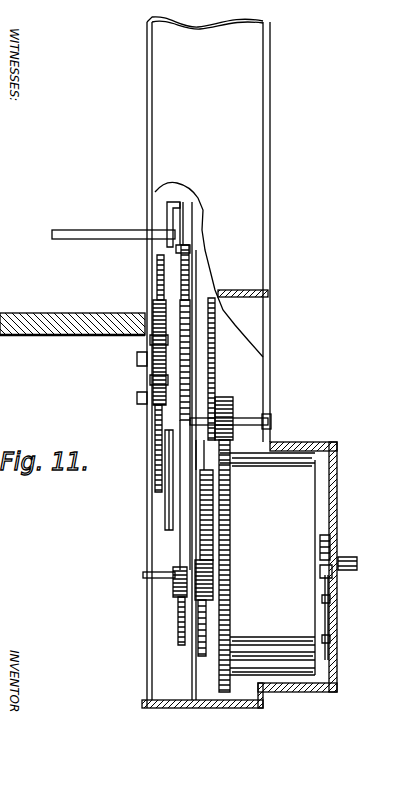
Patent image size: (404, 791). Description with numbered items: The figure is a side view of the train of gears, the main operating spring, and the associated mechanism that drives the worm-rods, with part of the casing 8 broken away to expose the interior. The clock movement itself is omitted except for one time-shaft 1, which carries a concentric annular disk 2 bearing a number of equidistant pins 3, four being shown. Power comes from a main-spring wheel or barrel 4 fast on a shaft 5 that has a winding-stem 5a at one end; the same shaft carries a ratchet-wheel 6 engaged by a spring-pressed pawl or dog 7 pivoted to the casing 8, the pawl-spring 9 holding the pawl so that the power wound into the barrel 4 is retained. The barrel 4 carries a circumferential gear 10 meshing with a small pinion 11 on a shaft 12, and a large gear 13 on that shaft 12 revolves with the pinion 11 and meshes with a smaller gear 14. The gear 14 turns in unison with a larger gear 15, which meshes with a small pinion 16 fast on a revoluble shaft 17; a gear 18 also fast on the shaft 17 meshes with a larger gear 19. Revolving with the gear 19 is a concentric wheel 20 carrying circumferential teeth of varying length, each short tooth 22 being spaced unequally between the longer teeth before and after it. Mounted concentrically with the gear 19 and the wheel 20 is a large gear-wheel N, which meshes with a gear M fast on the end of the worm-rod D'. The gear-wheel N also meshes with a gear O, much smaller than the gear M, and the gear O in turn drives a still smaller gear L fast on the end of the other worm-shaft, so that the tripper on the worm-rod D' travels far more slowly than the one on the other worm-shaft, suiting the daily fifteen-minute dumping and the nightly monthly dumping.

The time-shaft 1 is at (50, 234).
The annular disk 2 is at (180, 206).
The pins 3 is at (172, 204).
The main-spring wheel or barrel 4 is at (272, 622).
The shaft 5 is at (160, 565).
The winding-stem 5a is at (350, 560).
The ratchet-wheel 6 is at (330, 540).
The spring-pressed pawl or dog 7 is at (338, 583).
The casing 8 is at (337, 465).
The pawl-spring 9 is at (338, 632).
The gear 10 is at (232, 488).
The small pinion 11 is at (225, 397).
The shaft 12 is at (243, 418).
The large gear 13 is at (215, 338).
The smaller gear 14 is at (215, 555).
The larger gear 15 is at (215, 510).
The small pinion 16 is at (195, 600).
The revoluble shaft 17 is at (175, 588).
The gear 18 is at (178, 645).
The larger gear 19 is at (188, 267).
The wheel 20 is at (172, 285).
The short tooth 22 is at (160, 256).
The worm-rod D' is at (72, 310).
The gear L is at (152, 315).
The gear M is at (158, 280).
The large gear-wheel N is at (155, 438).
The gear O is at (152, 372).